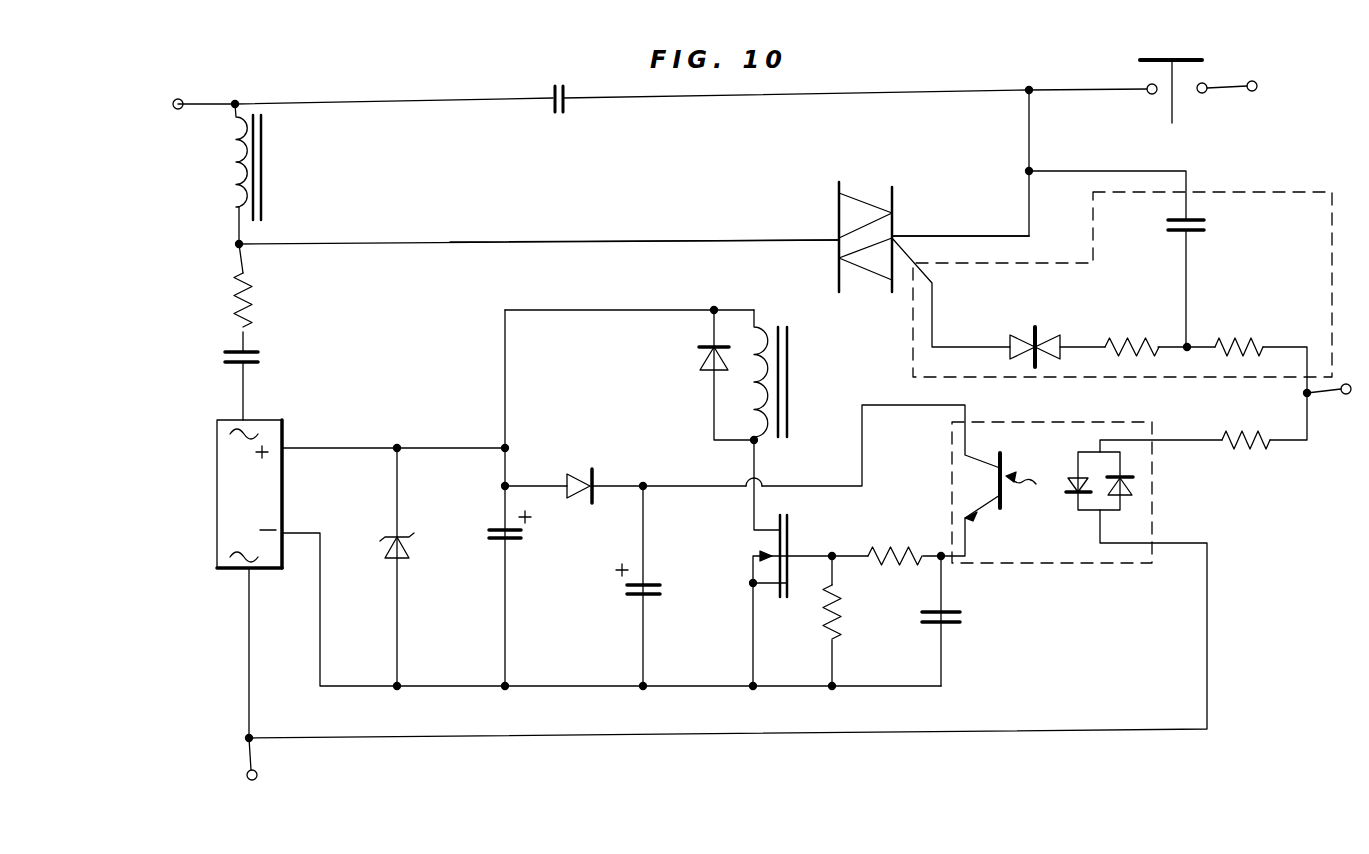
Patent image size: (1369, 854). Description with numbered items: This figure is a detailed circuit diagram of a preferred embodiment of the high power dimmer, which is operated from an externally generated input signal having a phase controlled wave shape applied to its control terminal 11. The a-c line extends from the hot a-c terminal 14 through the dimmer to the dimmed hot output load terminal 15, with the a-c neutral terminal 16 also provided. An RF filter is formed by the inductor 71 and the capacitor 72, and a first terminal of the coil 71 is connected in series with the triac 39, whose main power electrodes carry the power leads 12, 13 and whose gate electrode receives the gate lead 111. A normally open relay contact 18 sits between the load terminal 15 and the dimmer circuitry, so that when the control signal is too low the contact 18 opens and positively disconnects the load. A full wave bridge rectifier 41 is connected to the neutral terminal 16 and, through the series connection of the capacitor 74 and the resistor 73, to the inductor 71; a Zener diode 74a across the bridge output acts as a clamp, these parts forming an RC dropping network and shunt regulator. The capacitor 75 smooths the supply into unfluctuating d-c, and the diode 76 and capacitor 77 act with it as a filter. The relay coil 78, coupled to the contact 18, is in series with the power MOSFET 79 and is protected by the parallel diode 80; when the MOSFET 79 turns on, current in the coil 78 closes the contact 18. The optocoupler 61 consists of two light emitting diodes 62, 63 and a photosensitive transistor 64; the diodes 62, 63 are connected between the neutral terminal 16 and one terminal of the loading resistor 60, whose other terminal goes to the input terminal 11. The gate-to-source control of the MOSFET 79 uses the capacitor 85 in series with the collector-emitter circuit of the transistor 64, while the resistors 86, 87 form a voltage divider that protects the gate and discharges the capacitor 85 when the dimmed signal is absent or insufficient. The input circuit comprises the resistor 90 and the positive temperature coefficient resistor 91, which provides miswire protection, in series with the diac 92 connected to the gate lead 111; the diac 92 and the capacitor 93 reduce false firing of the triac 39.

The control terminal 11 is at (1346, 394).
The power lead 12 is at (681, 239).
The power lead 13 is at (975, 235).
The hot a-c terminal 14 is at (196, 84).
The output load terminal 15 is at (1257, 85).
The a-c neutral terminal 16 is at (246, 777).
The relay contact 18 is at (1186, 102).
The triac 39 is at (870, 193).
The rectifier 41 is at (216, 498).
The loading resistor 60 is at (1248, 436).
The optocoupler 61 is at (1088, 406).
The light emitting diode 62 is at (1072, 486).
The light emitting diode 63 is at (1137, 488).
The photosensitive transistor 64 is at (985, 488).
The inductor 71 is at (265, 174).
The capacitor 72 is at (558, 114).
The resistor 73 is at (262, 308).
The capacitor 74 is at (262, 358).
The Zener diode 74a is at (386, 557).
The capacitor 75 is at (488, 552).
The diode 76 is at (582, 470).
The capacitor 77 is at (620, 595).
The relay coil 78 is at (768, 332).
The power MOSFET 79 is at (790, 545).
The protective diode 80 is at (702, 356).
The capacitor 85 is at (964, 618).
The resistor 86 is at (822, 612).
The resistor 87 is at (900, 560).
The resistor 90 is at (1238, 337).
The positive temperature coefficient resistor 91 is at (1137, 334).
The diac 92 is at (1055, 314).
The capacitor 93 is at (1208, 225).
The gate lead 111 is at (938, 310).